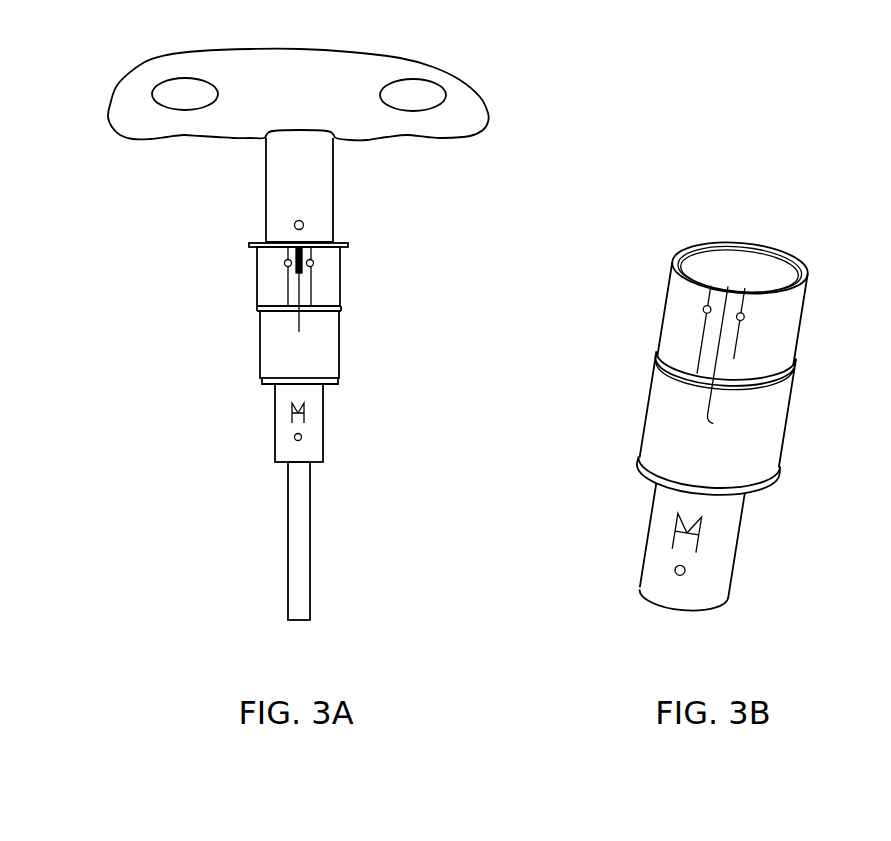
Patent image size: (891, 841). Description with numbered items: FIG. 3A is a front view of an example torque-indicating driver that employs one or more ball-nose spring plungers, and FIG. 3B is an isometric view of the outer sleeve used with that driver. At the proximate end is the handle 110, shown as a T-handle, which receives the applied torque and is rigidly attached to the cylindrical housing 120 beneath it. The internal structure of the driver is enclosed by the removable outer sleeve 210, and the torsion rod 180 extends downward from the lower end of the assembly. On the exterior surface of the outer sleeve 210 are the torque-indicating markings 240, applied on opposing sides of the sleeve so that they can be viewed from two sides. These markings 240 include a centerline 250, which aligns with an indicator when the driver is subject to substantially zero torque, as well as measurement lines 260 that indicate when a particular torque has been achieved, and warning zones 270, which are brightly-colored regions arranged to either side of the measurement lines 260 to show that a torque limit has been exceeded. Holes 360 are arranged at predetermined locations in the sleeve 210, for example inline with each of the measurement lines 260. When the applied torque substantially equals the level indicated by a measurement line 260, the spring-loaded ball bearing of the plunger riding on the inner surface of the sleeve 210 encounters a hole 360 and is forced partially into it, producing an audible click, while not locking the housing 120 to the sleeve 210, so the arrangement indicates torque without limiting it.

In FIG. 3A, the handle 110 is at (411, 61).
In FIG. 3A, the cylindrical housing 120 is at (334, 178).
In FIG. 3A, the torsion rod 180 is at (311, 541).
In FIG. 3A, the outer sleeve 210 is at (341, 369).
In FIG. 3B, the outer sleeve 210 is at (780, 463).
In FIG. 3A, the torque-indicating markings 240 is at (345, 290).
In FIG. 3A, the centerline 250 is at (299, 289).
In FIG. 3B, the centerline 250 is at (709, 418).
In FIG. 3B, the measurement lines 260 is at (688, 378).
In FIG. 3B, the warning zones 270 is at (660, 333).
In FIG. 3A, the holes 360 is at (286, 264).
In FIG. 3B, the holes 360 is at (704, 310).